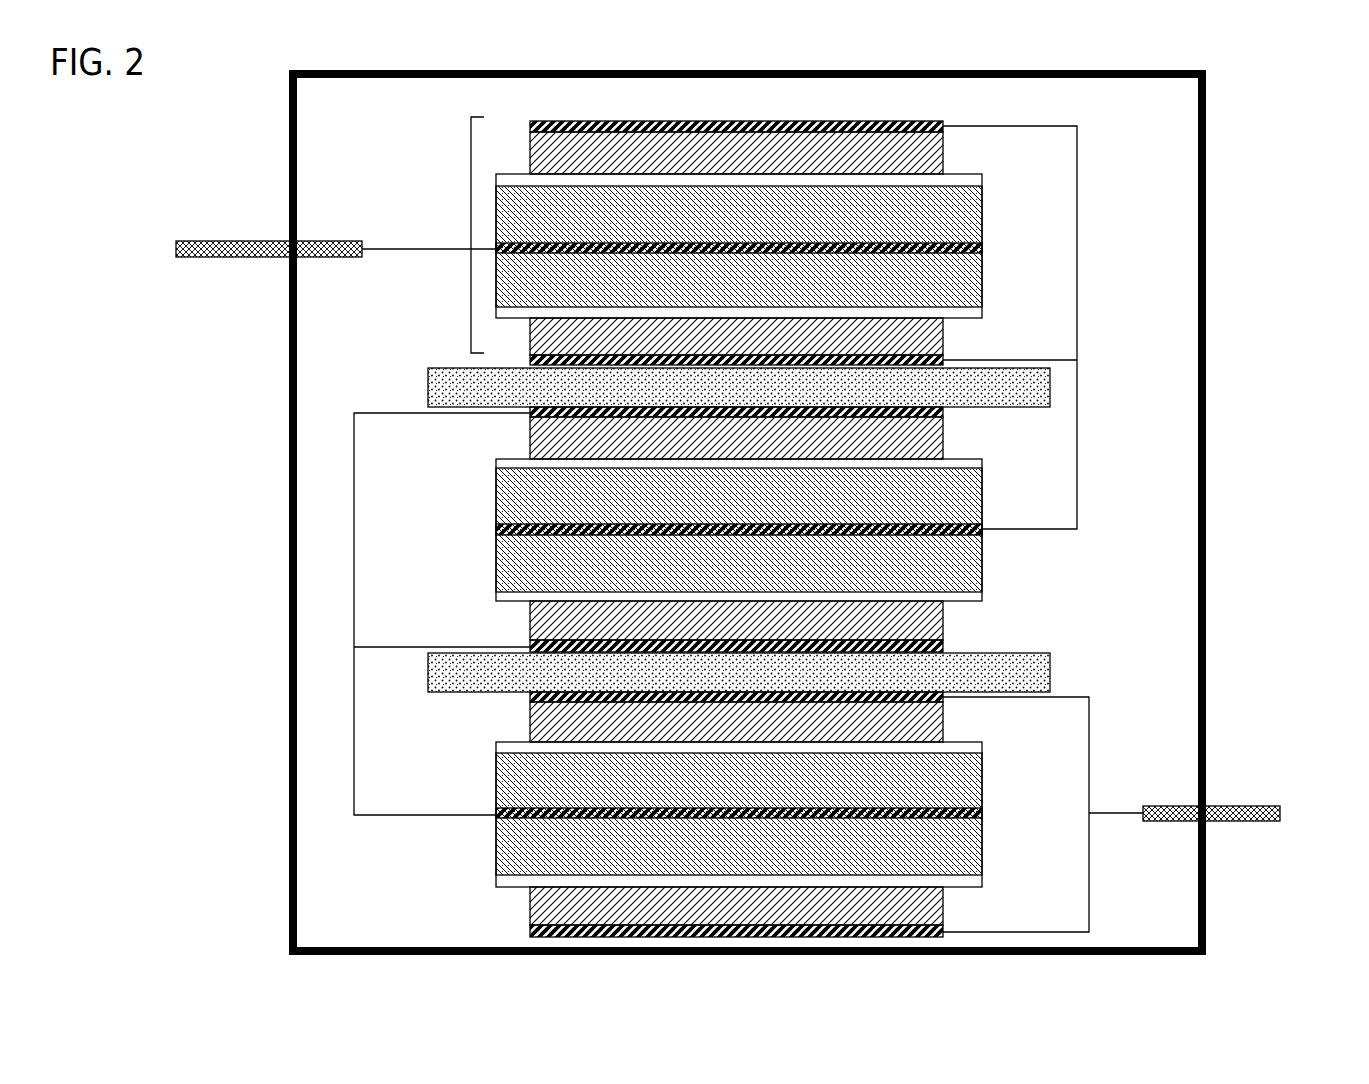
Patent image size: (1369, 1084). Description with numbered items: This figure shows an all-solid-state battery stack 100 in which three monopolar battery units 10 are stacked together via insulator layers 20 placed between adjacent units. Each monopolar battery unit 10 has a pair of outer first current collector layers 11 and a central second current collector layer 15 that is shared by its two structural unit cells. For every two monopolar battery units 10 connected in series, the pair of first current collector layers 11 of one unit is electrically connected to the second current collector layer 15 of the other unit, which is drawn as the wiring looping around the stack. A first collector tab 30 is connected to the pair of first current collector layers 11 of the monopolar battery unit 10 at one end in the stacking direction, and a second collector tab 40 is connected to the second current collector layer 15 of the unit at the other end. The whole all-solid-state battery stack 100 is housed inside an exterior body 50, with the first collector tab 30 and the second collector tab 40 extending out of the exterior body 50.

The all-solid-state battery stack 100 is at (1222, 501).
The monopolar battery unit 10 is at (471, 236).
The first current collector layer 11 is at (943, 361).
The second current collector layer 15 is at (983, 245).
The insulator layer 20 is at (430, 393).
The first collector tab 30 is at (1268, 806).
The second collector tab 40 is at (201, 241).
The exterior body 50 is at (290, 538).